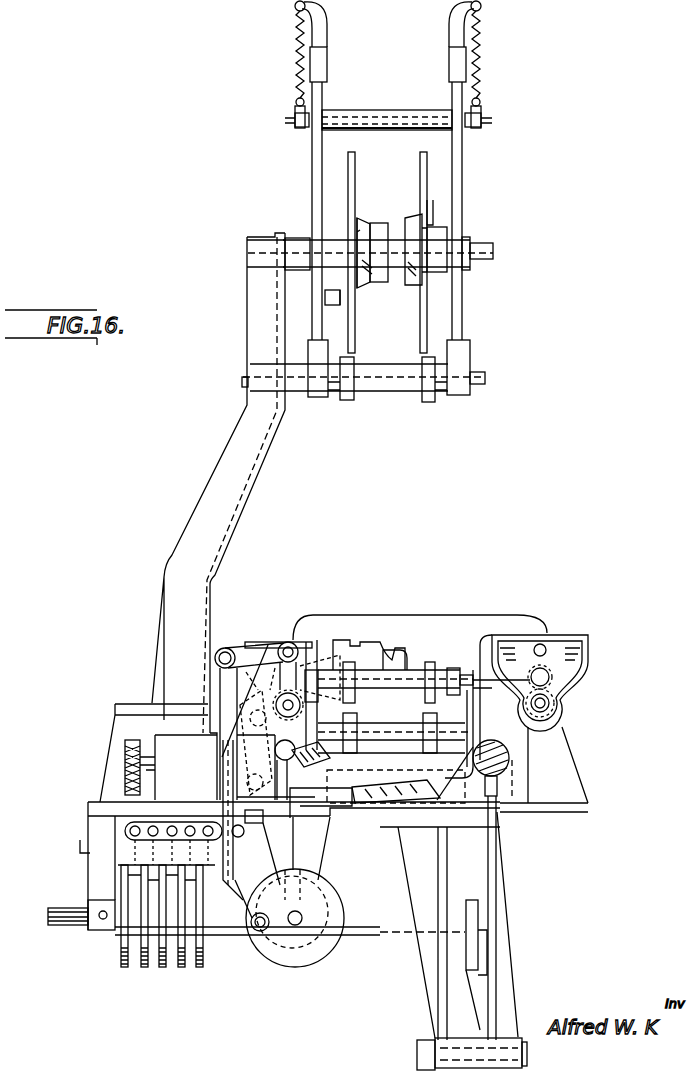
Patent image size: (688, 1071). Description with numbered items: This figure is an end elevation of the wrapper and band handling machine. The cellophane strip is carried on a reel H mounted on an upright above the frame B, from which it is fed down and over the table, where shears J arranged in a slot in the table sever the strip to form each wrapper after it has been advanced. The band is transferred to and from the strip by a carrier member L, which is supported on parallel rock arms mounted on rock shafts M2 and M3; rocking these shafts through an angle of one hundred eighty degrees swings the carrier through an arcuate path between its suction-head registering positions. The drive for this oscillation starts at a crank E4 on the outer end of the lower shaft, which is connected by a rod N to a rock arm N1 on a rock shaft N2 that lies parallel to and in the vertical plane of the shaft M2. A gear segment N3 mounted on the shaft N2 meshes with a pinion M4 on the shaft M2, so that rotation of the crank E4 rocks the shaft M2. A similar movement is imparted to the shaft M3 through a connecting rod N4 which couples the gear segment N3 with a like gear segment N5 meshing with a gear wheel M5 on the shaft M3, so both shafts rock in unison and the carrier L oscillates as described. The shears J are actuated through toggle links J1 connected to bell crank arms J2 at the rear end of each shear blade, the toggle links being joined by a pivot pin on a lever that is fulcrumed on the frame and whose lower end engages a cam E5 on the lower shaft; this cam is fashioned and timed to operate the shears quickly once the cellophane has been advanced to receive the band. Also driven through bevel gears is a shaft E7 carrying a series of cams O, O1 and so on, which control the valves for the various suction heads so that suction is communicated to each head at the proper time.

The reel H is at (425, 186).
The rock arm N1 is at (258, 643).
The rock shaft N2 is at (291, 640).
The rock shaft M2 is at (292, 692).
The gear segment N3 is at (292, 640).
The shears J is at (412, 682).
The carrier member L is at (500, 615).
The gear segment N5 is at (549, 665).
The rock shaft M3 is at (556, 705).
The gear wheel M5 is at (557, 712).
The connecting rod N4 is at (530, 684).
The pinion M4 is at (308, 755).
The toggle links J1 is at (204, 760).
The frame B is at (103, 806).
The bell crank arms J2 is at (270, 830).
The shaft E7 is at (80, 930).
The cam O is at (145, 967).
The cam O1 is at (163, 967).
The rod N is at (233, 930).
The cam E5 is at (283, 962).
The crank E4 is at (336, 945).